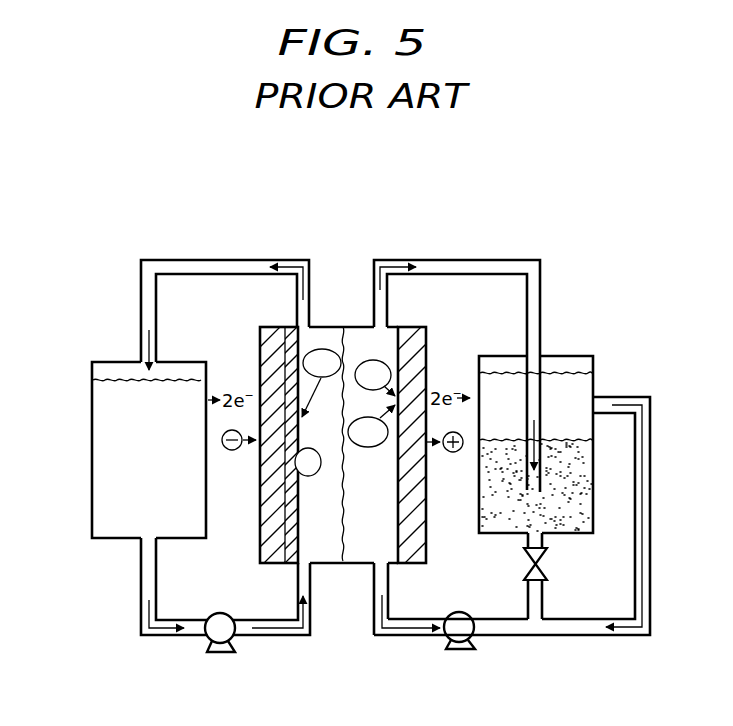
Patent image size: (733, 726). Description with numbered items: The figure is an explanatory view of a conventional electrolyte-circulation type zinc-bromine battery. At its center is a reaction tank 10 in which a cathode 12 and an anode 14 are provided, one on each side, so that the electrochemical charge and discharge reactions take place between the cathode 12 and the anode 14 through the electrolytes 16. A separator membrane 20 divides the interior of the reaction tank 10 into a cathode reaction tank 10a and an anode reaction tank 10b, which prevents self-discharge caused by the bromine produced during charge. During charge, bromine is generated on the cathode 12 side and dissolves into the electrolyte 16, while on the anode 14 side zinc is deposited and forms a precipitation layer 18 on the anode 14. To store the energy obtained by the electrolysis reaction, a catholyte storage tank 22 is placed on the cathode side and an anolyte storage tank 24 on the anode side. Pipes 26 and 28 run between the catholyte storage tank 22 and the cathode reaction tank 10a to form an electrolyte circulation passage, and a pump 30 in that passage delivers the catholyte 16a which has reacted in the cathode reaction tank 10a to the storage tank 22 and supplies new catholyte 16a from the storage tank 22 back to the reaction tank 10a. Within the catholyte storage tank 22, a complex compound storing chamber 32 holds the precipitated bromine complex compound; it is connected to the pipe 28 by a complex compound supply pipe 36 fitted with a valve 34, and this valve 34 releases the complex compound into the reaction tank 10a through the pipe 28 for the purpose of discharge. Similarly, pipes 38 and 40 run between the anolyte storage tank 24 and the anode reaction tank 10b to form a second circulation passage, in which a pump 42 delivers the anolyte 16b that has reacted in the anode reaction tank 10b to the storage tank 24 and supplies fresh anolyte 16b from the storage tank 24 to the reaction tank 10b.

The reaction tank 10 is at (352, 566).
The cathode reaction tank 10a is at (367, 550).
The anode reaction tank 10b is at (323, 566).
The cathode 12 is at (420, 346).
The anode 14 is at (265, 345).
The electrolytes 16 is at (360, 327).
The catholyte 16a is at (570, 390).
The anolyte 16b is at (98, 396).
The precipitation layer 18 is at (292, 530).
The separator membrane 20 is at (340, 326).
The catholyte storage tank 22 is at (595, 378).
The anolyte storage tank 24 is at (92, 450).
The pipe 26 is at (452, 260).
The pipe 28 is at (585, 655).
The pump 30 is at (462, 658).
The complex compound storing chamber 32 is at (583, 508).
The valve 34 is at (548, 566).
The complex compound supply pipe 36 is at (544, 595).
The pipe 38 is at (187, 260).
The pipe 40 is at (157, 655).
The pump 42 is at (220, 668).